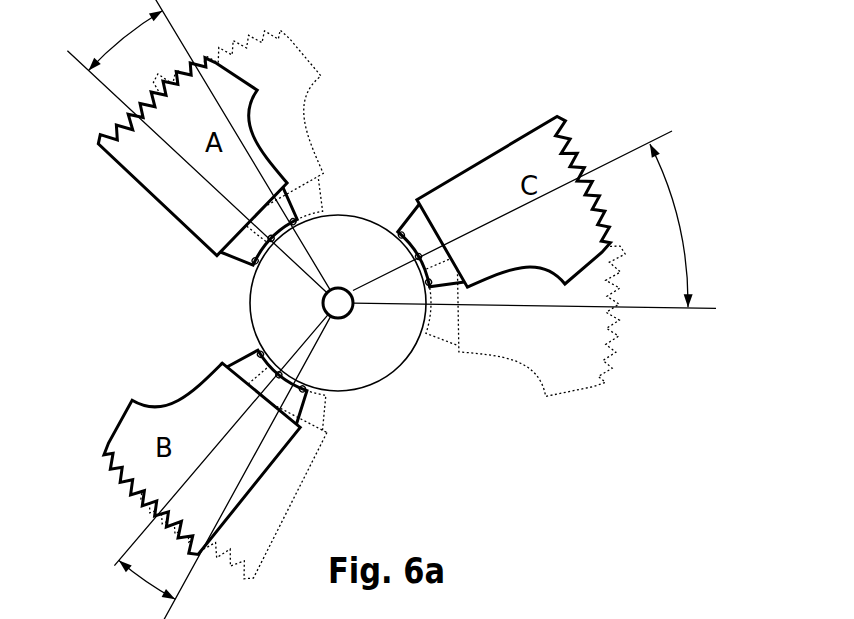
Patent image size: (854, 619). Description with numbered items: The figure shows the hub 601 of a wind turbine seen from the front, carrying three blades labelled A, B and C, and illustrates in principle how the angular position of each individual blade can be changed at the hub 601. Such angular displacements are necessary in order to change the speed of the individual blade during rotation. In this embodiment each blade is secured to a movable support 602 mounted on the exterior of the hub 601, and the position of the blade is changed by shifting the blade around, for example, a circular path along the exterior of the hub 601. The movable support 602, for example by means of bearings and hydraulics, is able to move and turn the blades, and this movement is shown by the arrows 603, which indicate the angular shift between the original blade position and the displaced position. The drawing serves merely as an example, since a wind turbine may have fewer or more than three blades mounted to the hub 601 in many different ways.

The hub 601 is at (383, 362).
The movable support 602 is at (423, 227).
The arrows 603 is at (400, 309).